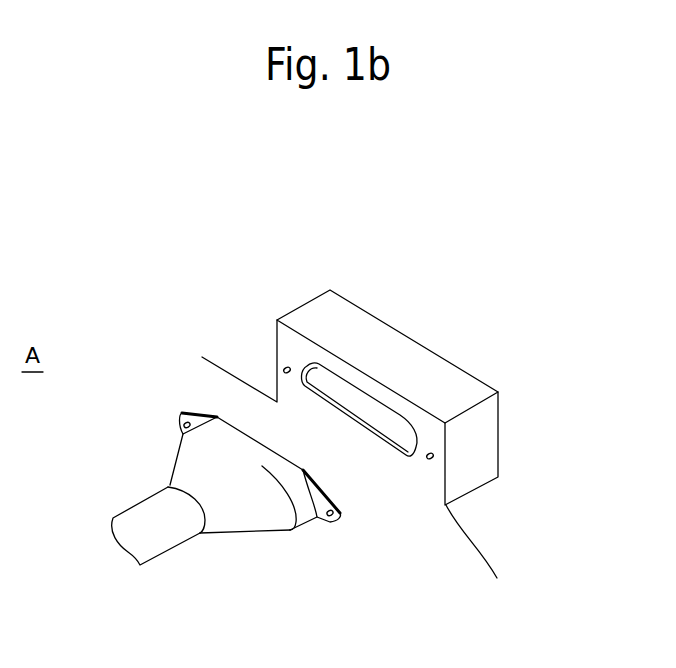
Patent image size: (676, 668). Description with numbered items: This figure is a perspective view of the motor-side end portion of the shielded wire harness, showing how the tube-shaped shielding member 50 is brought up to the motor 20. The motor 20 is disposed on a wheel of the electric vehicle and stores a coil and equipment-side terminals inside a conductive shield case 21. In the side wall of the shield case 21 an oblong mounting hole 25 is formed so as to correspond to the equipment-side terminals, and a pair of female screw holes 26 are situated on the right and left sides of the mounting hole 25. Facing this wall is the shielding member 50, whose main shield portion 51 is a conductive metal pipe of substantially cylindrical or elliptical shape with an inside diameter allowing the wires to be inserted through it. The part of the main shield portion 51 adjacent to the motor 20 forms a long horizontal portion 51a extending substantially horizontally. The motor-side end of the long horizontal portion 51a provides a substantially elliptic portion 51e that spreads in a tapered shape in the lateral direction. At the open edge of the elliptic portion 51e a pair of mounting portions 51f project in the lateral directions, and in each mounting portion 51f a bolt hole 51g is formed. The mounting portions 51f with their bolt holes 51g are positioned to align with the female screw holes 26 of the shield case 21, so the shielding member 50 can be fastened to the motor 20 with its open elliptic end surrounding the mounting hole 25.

The motor 20 is at (263, 315).
The shield case 21 is at (313, 352).
The mounting hole 25 is at (360, 399).
The female screw hole 26 is at (285, 371).
The tube-shaped shielding member 50 is at (116, 494).
The main shield portion 51 is at (152, 505).
The long horizontal portion 51a is at (165, 543).
The substantially elliptic portion 51e is at (256, 466).
The mounting portion 51f is at (178, 418).
The bolt hole 51g is at (340, 521).